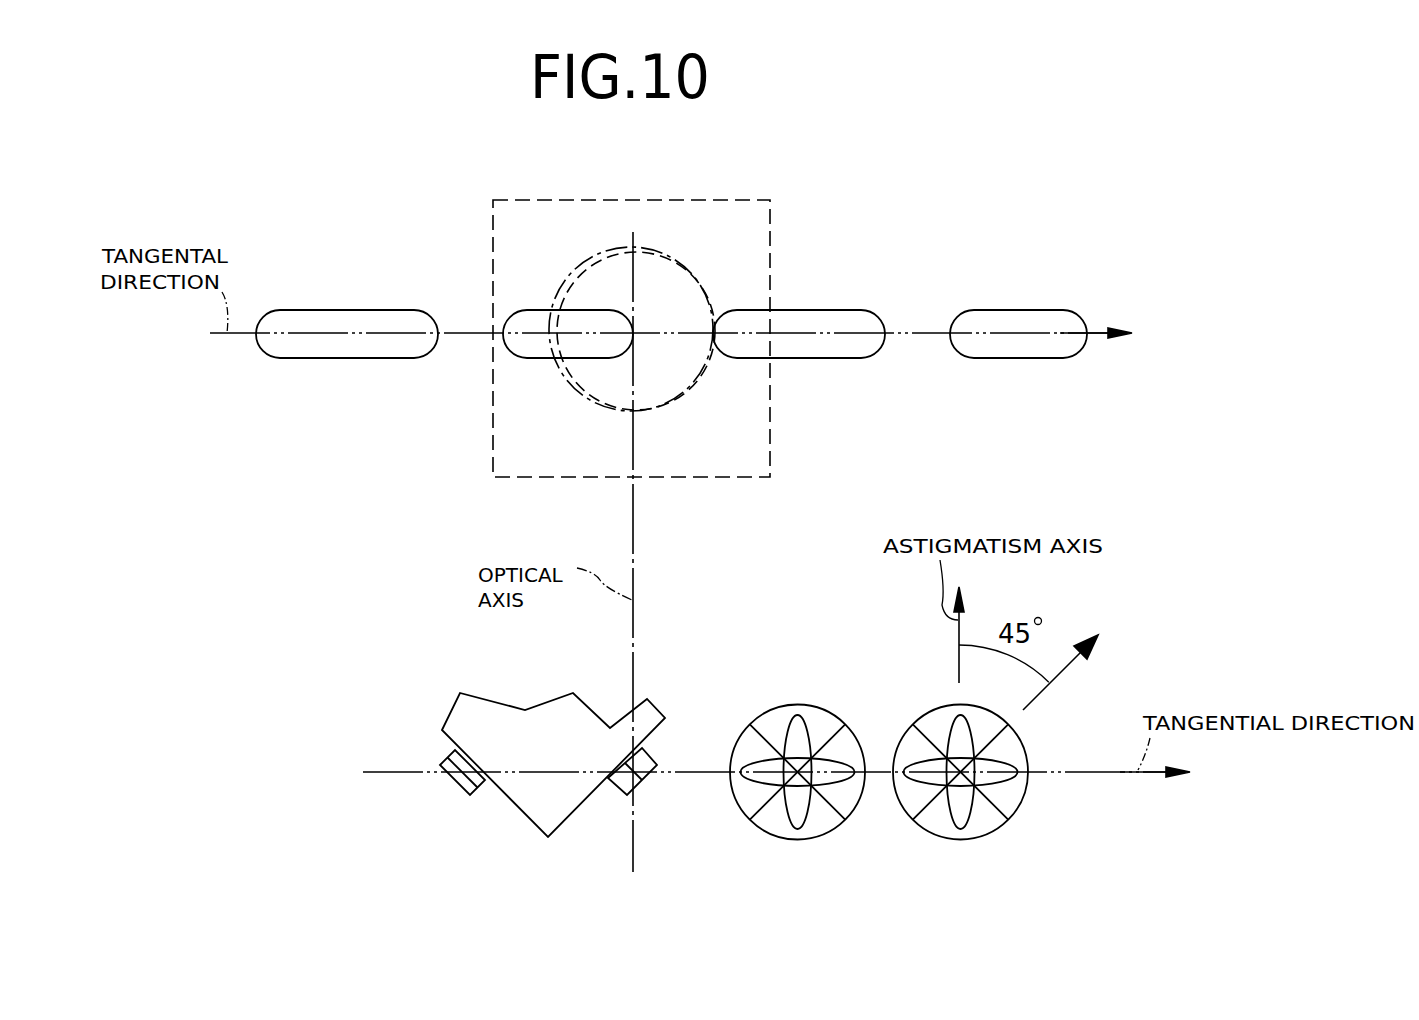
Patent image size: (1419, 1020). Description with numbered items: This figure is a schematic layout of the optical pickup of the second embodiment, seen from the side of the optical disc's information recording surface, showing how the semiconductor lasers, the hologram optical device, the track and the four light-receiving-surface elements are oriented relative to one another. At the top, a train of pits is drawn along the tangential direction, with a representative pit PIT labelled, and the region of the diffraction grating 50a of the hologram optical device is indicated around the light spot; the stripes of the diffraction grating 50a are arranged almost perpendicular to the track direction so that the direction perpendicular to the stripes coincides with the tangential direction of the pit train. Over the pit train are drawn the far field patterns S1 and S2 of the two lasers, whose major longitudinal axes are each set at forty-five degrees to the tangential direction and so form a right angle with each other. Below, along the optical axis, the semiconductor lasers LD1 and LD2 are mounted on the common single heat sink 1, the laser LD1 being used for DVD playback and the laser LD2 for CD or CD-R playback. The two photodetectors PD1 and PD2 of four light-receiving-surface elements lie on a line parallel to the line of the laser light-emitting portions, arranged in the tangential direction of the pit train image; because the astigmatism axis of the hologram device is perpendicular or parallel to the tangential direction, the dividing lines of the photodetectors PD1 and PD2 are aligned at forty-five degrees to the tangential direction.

The diffraction grating 50a is at (493, 237).
The far field pattern of semiconductor laser LD2 S2 is at (705, 272).
The far field pattern of semiconductor laser LD1 S1 is at (700, 385).
The pit PIT is at (860, 310).
The common single heat sink 1 is at (450, 722).
The semiconductor laser LD1 is at (645, 780).
The semiconductor laser LD2 is at (458, 787).
The photodetector of four light-receiving-surface elements PD1 is at (798, 840).
The photodetector of four light-receiving-surface elements PD2 is at (961, 840).